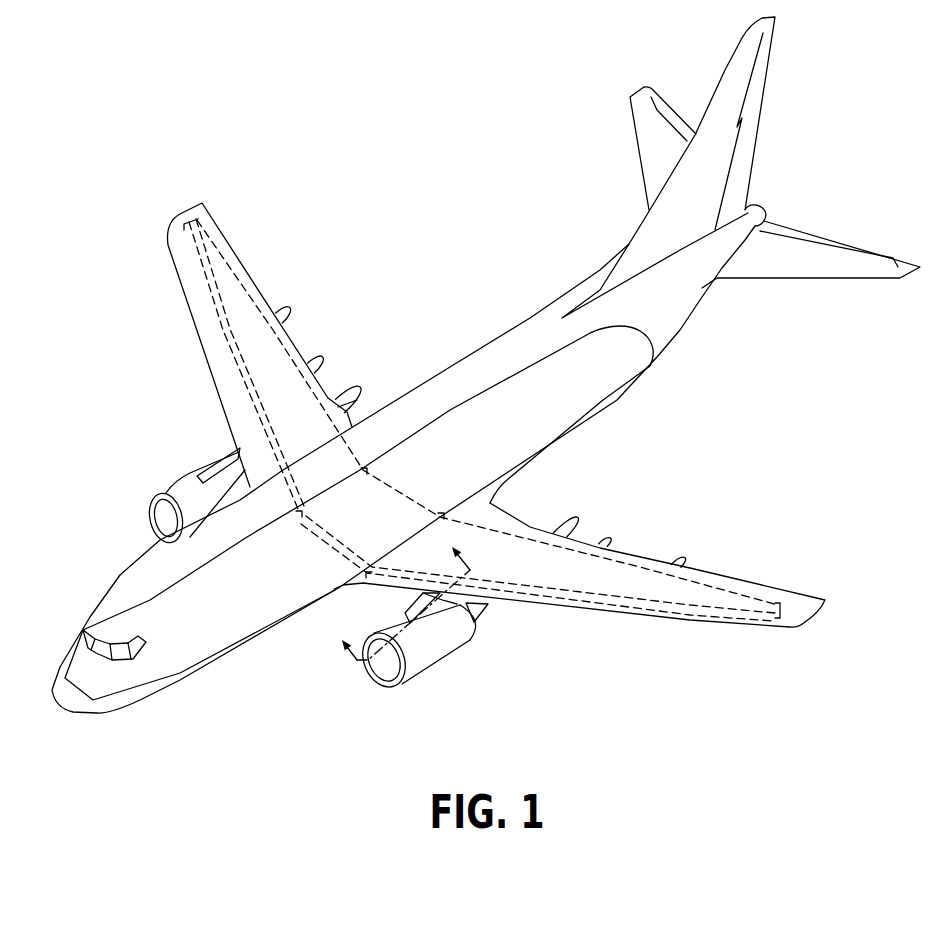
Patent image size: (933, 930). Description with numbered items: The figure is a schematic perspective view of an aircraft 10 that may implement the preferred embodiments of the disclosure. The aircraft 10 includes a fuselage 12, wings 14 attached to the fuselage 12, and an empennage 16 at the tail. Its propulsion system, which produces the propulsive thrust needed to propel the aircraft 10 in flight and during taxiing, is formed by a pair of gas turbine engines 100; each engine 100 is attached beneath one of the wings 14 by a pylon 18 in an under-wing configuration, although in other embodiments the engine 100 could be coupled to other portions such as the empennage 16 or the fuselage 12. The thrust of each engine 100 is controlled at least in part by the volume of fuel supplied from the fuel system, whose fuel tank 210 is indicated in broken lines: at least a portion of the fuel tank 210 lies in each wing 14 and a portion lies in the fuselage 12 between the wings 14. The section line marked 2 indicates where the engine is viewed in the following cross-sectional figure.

The aircraft 10 is at (188, 425).
The fuselage 12 is at (540, 437).
The wings 14 is at (183, 255).
The empennage 16 is at (772, 145).
The pylon 18 is at (472, 615).
The engine 100 is at (460, 672).
The fuel tank 210 is at (628, 573).
The section line 2- 2 is at (395, 591).